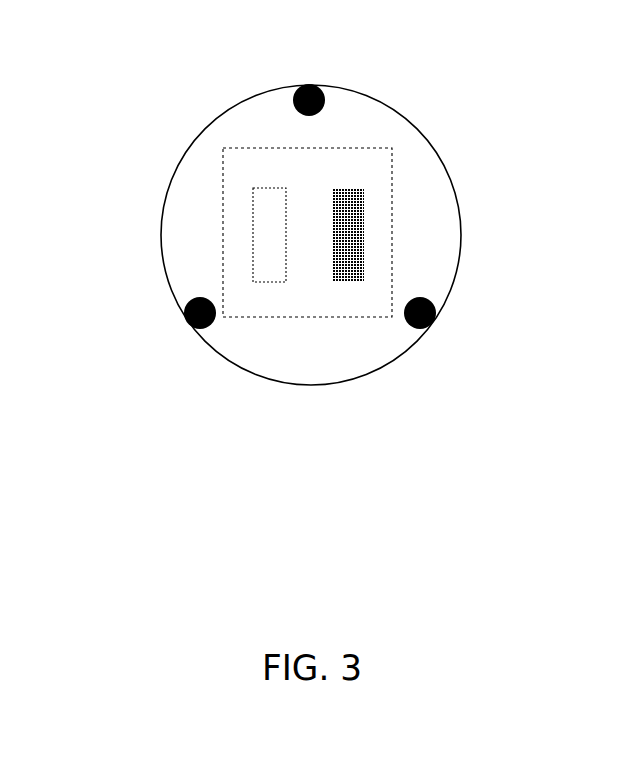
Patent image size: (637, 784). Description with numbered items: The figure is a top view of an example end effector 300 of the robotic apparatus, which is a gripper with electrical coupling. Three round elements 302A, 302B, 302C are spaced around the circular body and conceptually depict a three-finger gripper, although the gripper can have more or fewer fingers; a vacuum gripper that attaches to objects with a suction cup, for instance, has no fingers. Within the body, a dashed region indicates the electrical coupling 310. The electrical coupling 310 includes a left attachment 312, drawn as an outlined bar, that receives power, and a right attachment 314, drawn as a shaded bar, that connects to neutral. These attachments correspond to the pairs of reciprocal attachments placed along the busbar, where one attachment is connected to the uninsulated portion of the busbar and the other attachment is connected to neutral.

The sensor assembly 300 is at (93, 458).
The gripper finger 302A is at (396, 35).
The gripper finger 302B is at (183, 328).
The gripper finger 302C is at (438, 323).
The electrical coupling 310 is at (221, 228).
The left attachment 312 is at (268, 290).
The right attachment 314 is at (368, 200).